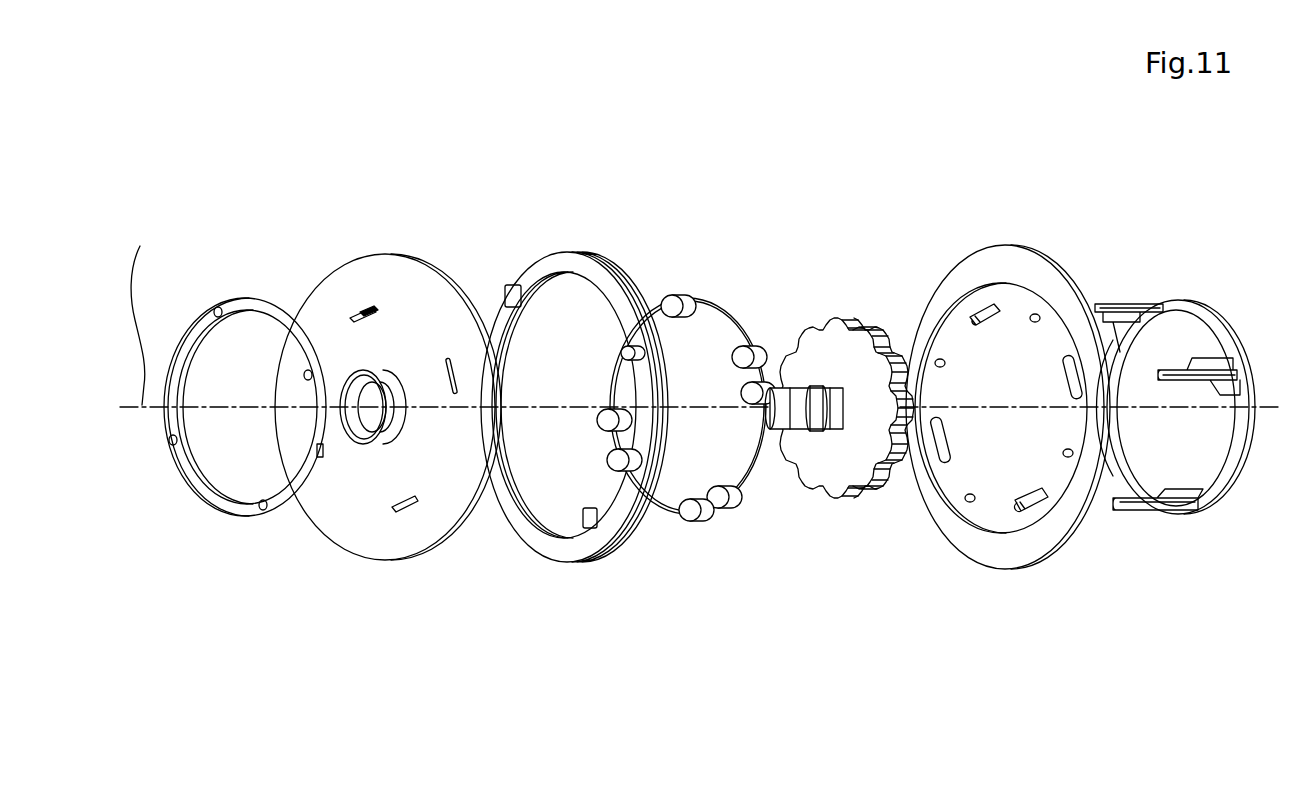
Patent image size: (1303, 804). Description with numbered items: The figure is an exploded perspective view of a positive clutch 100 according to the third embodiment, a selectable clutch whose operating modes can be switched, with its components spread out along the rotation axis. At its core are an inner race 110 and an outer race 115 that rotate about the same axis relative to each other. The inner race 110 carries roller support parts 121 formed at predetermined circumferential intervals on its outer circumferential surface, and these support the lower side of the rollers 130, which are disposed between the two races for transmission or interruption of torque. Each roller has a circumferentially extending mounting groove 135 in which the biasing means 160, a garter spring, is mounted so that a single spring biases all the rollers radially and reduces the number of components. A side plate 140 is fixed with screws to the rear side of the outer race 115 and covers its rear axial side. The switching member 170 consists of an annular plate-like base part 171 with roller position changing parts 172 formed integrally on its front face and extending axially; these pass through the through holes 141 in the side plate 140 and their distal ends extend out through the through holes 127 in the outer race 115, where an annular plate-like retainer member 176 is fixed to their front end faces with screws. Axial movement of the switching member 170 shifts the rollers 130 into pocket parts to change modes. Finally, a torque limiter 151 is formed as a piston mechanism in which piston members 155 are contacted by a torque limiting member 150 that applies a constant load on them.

The positive clutch 100 is at (701, 460).
The inner race 110 is at (839, 393).
The outer race 115 is at (379, 573).
The roller support parts 121 is at (883, 328).
The through holes 127 is at (362, 306).
The rollers 130 is at (686, 412).
The mounting groove 135 is at (707, 525).
The side plate 140 is at (1008, 431).
The through holes 141 is at (987, 302).
The torque limiting member 150 is at (505, 545).
The torque limiter 151 is at (550, 471).
The piston members 155 is at (590, 547).
The biasing means 160 is at (716, 298).
The switching member 170 is at (1175, 410).
The base part 171 is at (1177, 303).
The roller position changing parts 172 is at (1105, 305).
The retainer member 176 is at (241, 524).